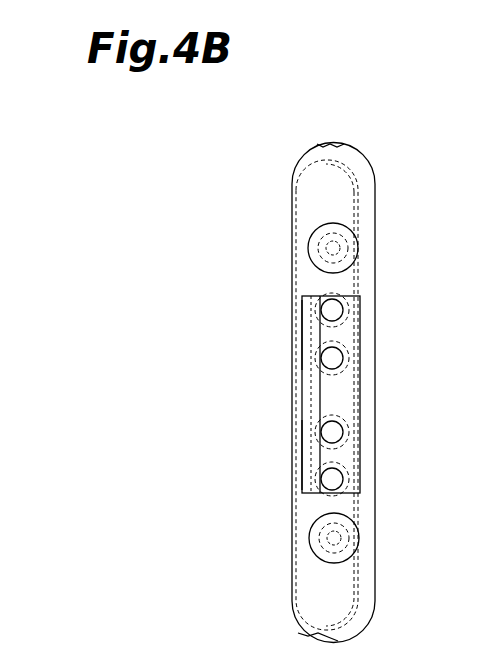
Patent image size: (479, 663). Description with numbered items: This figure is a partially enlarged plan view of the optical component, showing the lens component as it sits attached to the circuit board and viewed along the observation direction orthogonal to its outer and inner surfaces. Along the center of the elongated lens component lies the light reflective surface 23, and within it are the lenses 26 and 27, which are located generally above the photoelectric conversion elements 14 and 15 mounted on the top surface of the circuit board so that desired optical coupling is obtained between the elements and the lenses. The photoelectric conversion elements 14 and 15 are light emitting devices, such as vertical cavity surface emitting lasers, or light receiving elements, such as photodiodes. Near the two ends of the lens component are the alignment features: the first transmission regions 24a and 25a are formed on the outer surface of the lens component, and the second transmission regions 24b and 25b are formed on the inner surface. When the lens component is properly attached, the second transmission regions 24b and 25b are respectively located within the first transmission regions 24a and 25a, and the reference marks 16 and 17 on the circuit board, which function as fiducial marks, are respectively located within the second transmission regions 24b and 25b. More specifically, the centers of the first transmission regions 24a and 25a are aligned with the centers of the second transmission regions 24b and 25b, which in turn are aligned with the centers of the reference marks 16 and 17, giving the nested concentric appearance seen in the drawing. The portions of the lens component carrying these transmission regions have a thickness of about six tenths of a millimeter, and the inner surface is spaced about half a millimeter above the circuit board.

The photoelectric conversion element 14 is at (318, 436).
The photoelectric conversion element 15 is at (318, 311).
The reference mark 16 is at (358, 542).
The reference mark 17 is at (350, 262).
The light reflective surface 23 is at (340, 393).
The first transmission region 24a is at (316, 555).
The second transmission region 24b is at (347, 524).
The first transmission region 25a is at (326, 226).
The second transmission region 25b is at (348, 234).
The lens 26 is at (345, 422).
The lens 27 is at (345, 310).